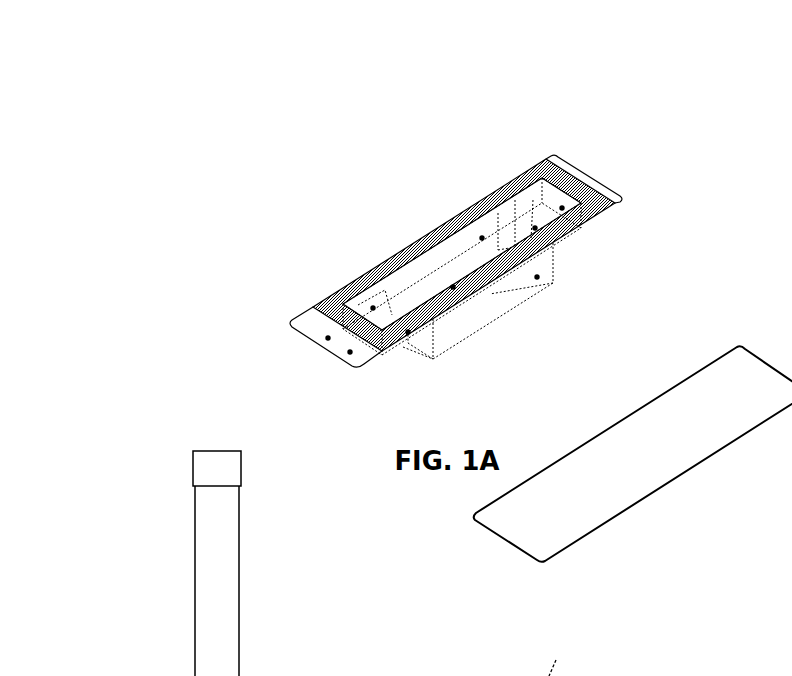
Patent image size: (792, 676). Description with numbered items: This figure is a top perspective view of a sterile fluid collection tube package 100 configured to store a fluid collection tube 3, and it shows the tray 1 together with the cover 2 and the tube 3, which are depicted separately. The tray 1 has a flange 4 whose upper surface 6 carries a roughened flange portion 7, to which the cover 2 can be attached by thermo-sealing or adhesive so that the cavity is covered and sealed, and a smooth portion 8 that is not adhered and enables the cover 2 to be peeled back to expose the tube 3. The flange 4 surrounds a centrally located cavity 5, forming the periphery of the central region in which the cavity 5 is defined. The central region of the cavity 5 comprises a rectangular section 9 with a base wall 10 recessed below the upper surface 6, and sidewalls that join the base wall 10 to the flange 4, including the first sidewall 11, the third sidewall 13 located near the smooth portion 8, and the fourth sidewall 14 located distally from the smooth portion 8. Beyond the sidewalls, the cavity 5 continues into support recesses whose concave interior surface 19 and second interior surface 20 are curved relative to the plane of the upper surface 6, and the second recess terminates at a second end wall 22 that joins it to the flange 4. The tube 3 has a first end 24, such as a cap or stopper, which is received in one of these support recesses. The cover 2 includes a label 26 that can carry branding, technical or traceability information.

The sterile fluid collection tube package 100 is at (283, 70).
The tray 1 is at (616, 152).
The cover 2 is at (705, 462).
The fluid collection tube 3 is at (239, 538).
The flange 4 is at (348, 355).
The cavity 5 is at (448, 256).
The upper surface 6 is at (348, 272).
The flange portion 7 is at (420, 354).
The smooth portion 8 is at (325, 339).
The rectangular section 9 is at (482, 235).
The base wall 10 is at (453, 287).
The first sidewall 11 is at (540, 278).
The third sidewall 13 is at (425, 340).
The fourth sidewall 14 is at (503, 243).
The interior surface 19 is at (370, 306).
The second interior surface 20 is at (535, 225).
The second end wall 22 is at (564, 205).
The first end 24 is at (230, 479).
The label 26 is at (560, 653).